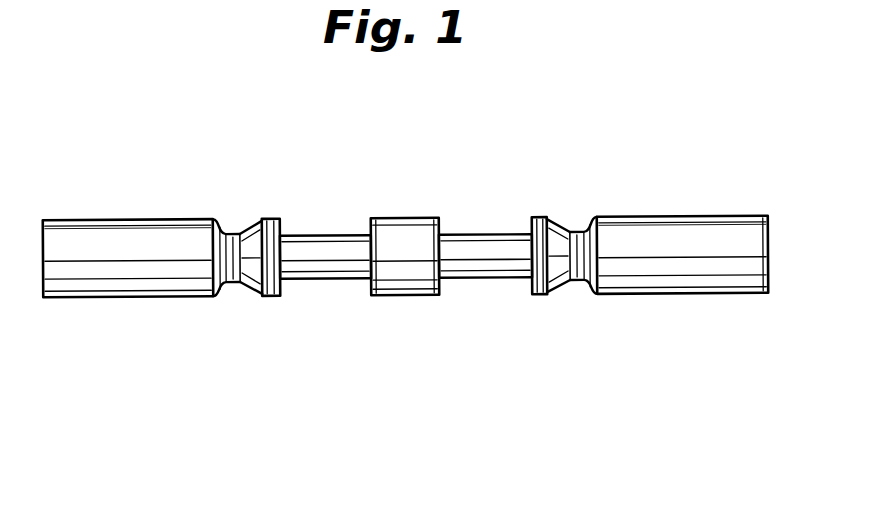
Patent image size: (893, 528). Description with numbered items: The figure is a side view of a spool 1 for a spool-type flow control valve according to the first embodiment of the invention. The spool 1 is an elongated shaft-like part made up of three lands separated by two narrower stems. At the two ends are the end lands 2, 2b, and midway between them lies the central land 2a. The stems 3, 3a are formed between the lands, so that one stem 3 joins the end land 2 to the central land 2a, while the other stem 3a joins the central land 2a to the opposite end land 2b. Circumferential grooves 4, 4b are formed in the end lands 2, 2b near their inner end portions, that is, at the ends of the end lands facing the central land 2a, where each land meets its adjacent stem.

The spool 1 is at (407, 249).
The end land 2 is at (705, 294).
The central land 2a is at (416, 297).
The end land 2b is at (125, 297).
The stem 3 is at (477, 230).
The stem 3a is at (318, 235).
The circumferential groove 4 is at (578, 232).
The circumferential groove 4b is at (232, 233).